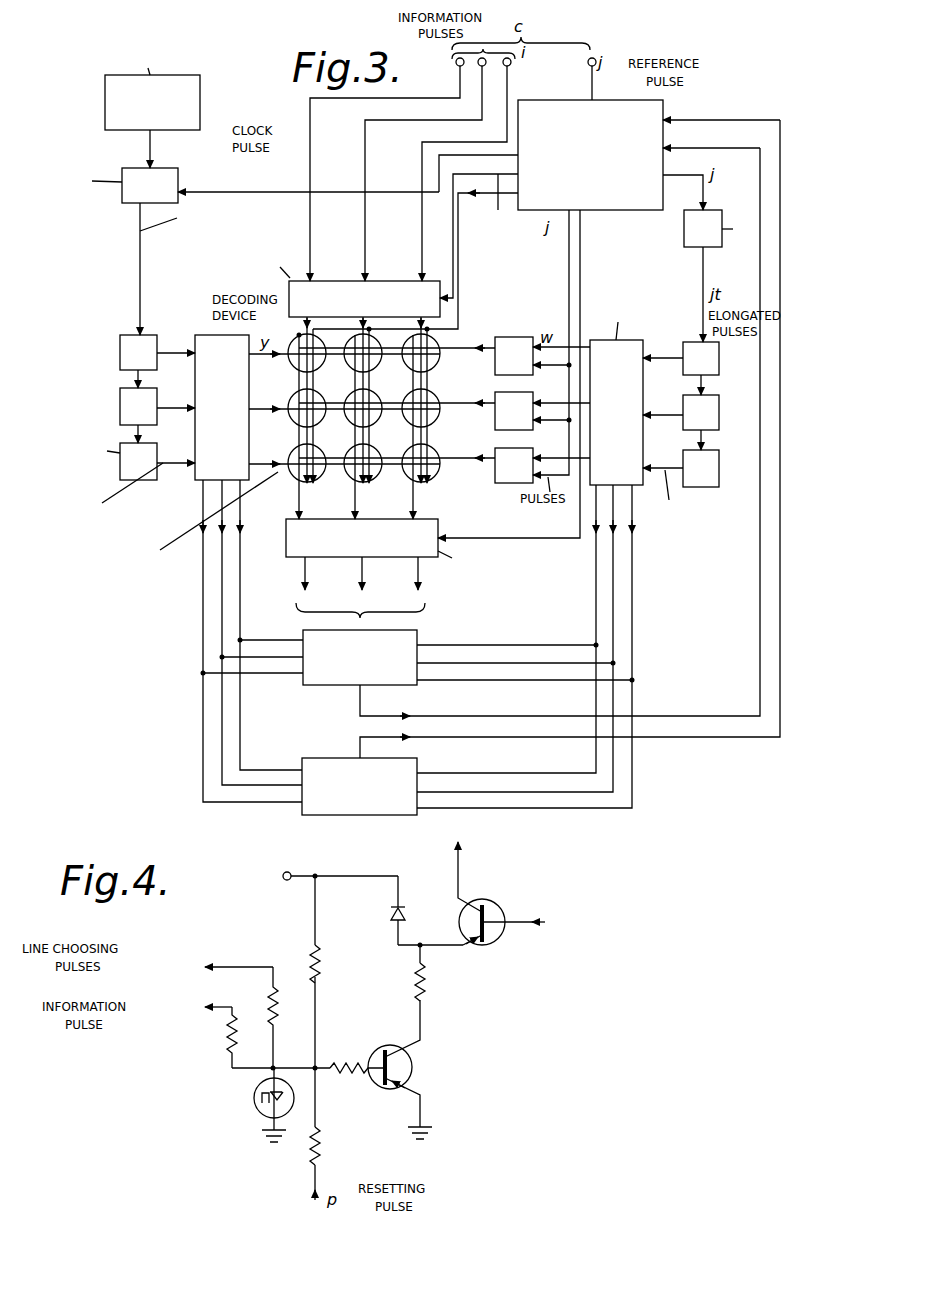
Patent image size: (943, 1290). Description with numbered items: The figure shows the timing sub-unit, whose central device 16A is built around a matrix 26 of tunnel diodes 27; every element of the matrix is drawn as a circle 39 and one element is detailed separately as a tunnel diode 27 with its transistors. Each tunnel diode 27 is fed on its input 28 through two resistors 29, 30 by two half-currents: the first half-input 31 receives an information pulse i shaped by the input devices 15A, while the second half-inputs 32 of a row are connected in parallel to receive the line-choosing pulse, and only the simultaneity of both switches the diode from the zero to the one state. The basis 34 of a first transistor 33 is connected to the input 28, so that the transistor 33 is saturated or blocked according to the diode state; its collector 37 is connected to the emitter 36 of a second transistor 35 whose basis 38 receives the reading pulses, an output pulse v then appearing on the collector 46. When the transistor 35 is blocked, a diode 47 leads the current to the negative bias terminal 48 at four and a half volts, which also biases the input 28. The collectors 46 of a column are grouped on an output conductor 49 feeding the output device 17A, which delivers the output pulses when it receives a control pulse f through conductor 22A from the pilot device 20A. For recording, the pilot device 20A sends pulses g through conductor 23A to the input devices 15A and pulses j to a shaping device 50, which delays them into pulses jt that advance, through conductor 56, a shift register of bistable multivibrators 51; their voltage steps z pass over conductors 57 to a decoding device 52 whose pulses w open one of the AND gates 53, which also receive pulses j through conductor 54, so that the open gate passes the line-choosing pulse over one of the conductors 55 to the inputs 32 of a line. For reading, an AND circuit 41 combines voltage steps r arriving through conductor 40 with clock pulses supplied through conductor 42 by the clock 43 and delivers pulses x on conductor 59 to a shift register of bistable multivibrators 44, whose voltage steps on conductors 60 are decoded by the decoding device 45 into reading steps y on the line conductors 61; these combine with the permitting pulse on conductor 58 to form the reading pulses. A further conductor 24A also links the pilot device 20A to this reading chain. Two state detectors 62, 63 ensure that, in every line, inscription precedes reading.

In FIG. 3, the clock 43 is at (163, 114).
In FIG. 3, the conductor 42 is at (154, 146).
In FIG. 3, the AND circuit 41 is at (158, 198).
In FIG. 3, the conductor 40 is at (308, 181).
In FIG. 3, the conductor 59 is at (143, 247).
In FIG. 3, the conductors 60 is at (172, 353).
In FIG. 3, the bistable multivibrators 44 is at (138, 355).
In FIG. 3, the decoding device 45 is at (233, 408).
In FIG. 3, the basis of transistor 34 is at (299, 335).
In FIG. 4, the basis of transistor 34 is at (378, 1080).
In FIG. 3, the input devices 15A is at (384, 312).
In FIG. 3, the central device 16A is at (287, 391).
In FIG. 3, the matrix of tunnel diodes 26 is at (400, 383).
In FIG. 3, the line conductors 61 is at (263, 463).
In FIG. 3, the output conductor 49 is at (300, 497).
In FIG. 4, the output conductor 49 is at (458, 867).
In FIG. 3, the circles 39 is at (430, 478).
In FIG. 4, the circles 39 is at (490, 1062).
In FIG. 3, the output device 17A is at (382, 550).
In FIG. 3, the conductor 22A is at (509, 374).
In FIG. 3, the line 24A is at (308, 221).
In FIG. 3, the conductor 23A is at (418, 253).
In FIG. 3, the conductor 58 is at (456, 243).
In FIG. 3, the pilot device 20A is at (604, 154).
In FIG. 3, the shaping device 50 is at (713, 238).
In FIG. 3, the conductor 54 is at (569, 278).
In FIG. 3, the conductor 56 is at (703, 282).
In FIG. 3, the conductors 57 is at (657, 354).
In FIG. 3, the conductors 55 is at (522, 337).
In FIG. 3, the AND gates 53 is at (502, 462).
In FIG. 3, the decoding device 52 is at (628, 423).
In FIG. 3, the bistable multivibrators 51 is at (712, 362).
In FIG. 3, the state detector 62 is at (325, 715).
In FIG. 3, the state detector 63 is at (330, 737).
In FIG. 4, the negative bias terminal 48 is at (300, 868).
In FIG. 4, the diode 47 is at (404, 918).
In FIG. 4, the collector 46 is at (478, 905).
In FIG. 4, the transistor 35 is at (533, 895).
In FIG. 4, the basis of transistor 38 is at (495, 935).
In FIG. 4, the emitter 36 is at (472, 951).
In FIG. 4, the collector 37 is at (402, 1060).
In FIG. 4, the transistor 33 is at (388, 1045).
In FIG. 4, the input of tunnel diode 28 is at (275, 1066).
In FIG. 4, the resistor 30 is at (279, 1013).
In FIG. 4, the resistor 29 is at (225, 1038).
In FIG. 4, the first half-input 31 is at (210, 1006).
In FIG. 4, the second half-input 32 is at (210, 966).
In FIG. 4, the tunnel diode 27 is at (256, 1091).